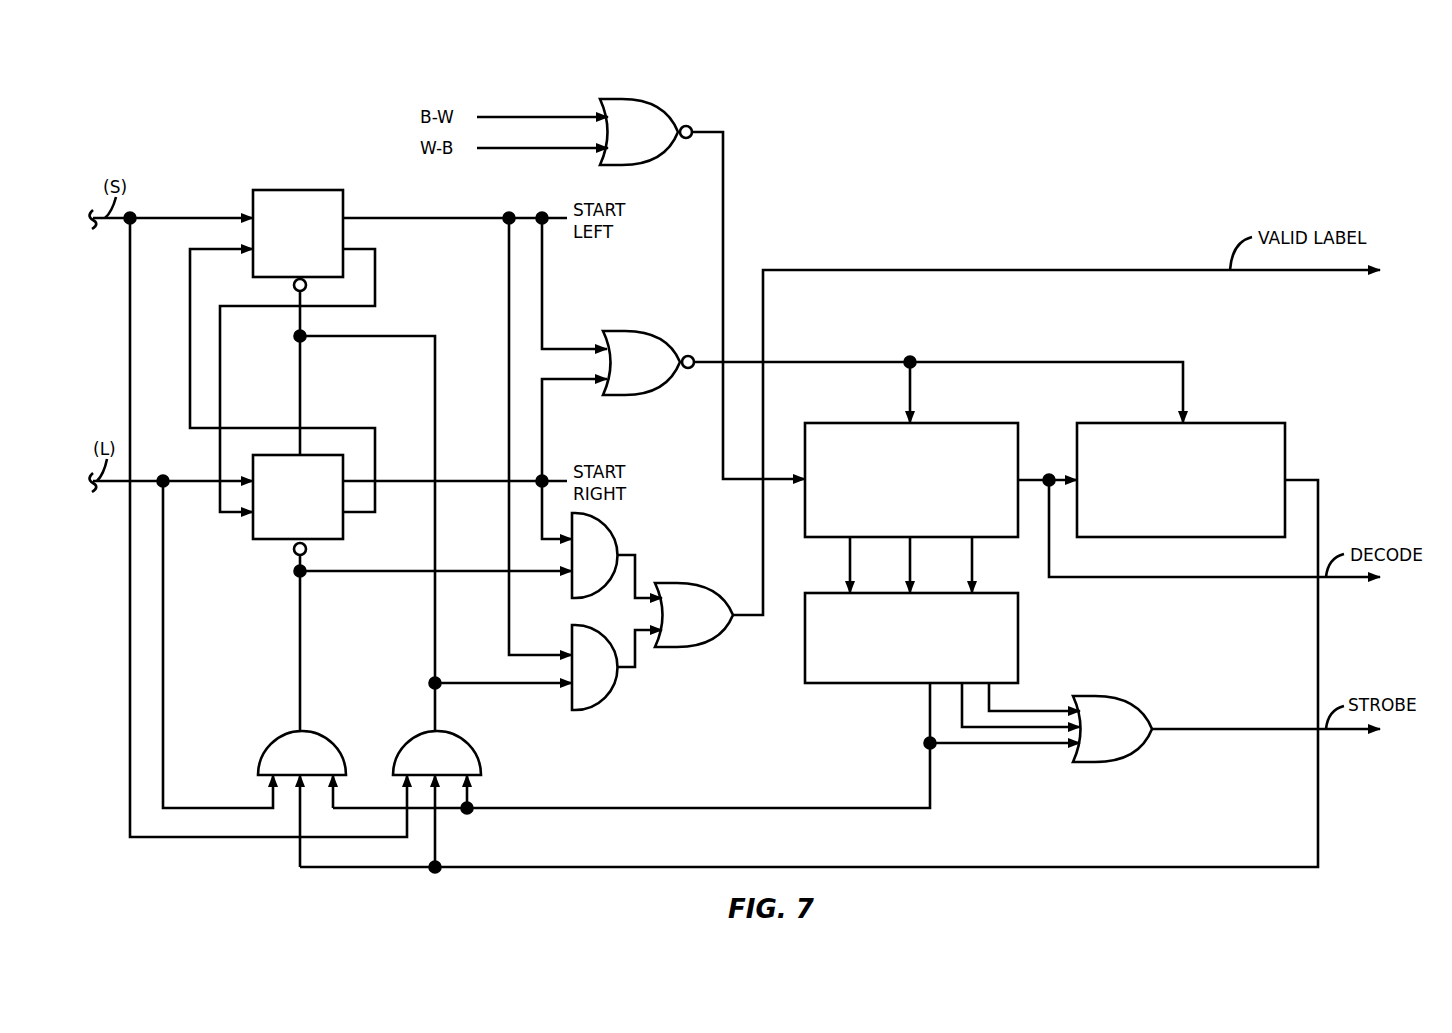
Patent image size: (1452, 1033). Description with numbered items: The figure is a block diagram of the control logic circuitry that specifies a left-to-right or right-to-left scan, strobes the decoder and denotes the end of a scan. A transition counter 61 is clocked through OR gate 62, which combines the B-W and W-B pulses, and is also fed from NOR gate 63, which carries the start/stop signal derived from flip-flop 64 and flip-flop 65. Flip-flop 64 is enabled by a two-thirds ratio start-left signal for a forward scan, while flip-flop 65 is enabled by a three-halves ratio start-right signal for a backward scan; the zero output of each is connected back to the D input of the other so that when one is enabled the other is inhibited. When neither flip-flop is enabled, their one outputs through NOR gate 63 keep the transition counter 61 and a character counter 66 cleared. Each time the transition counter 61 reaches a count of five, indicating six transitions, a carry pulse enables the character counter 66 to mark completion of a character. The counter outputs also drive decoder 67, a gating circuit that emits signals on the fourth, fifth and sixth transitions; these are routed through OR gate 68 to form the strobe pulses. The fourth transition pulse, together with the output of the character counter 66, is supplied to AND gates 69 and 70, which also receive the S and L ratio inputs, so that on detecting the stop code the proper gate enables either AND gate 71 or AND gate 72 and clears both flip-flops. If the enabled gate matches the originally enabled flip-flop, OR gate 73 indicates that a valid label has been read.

The transition counter 61 is at (945, 423).
The OR gate 62 is at (672, 107).
The NOR gate 63 is at (670, 338).
The flip-flop 64 is at (341, 192).
The flip-flop 65 is at (280, 540).
The character counter 66 is at (1230, 423).
The decoder 67 is at (1018, 620).
The OR gate 68 is at (1143, 752).
The AND gate 69 is at (410, 740).
The AND gate 70 is at (282, 738).
The AND gate 71 is at (572, 708).
The AND gate 72 is at (572, 598).
The OR gate 73 is at (697, 583).